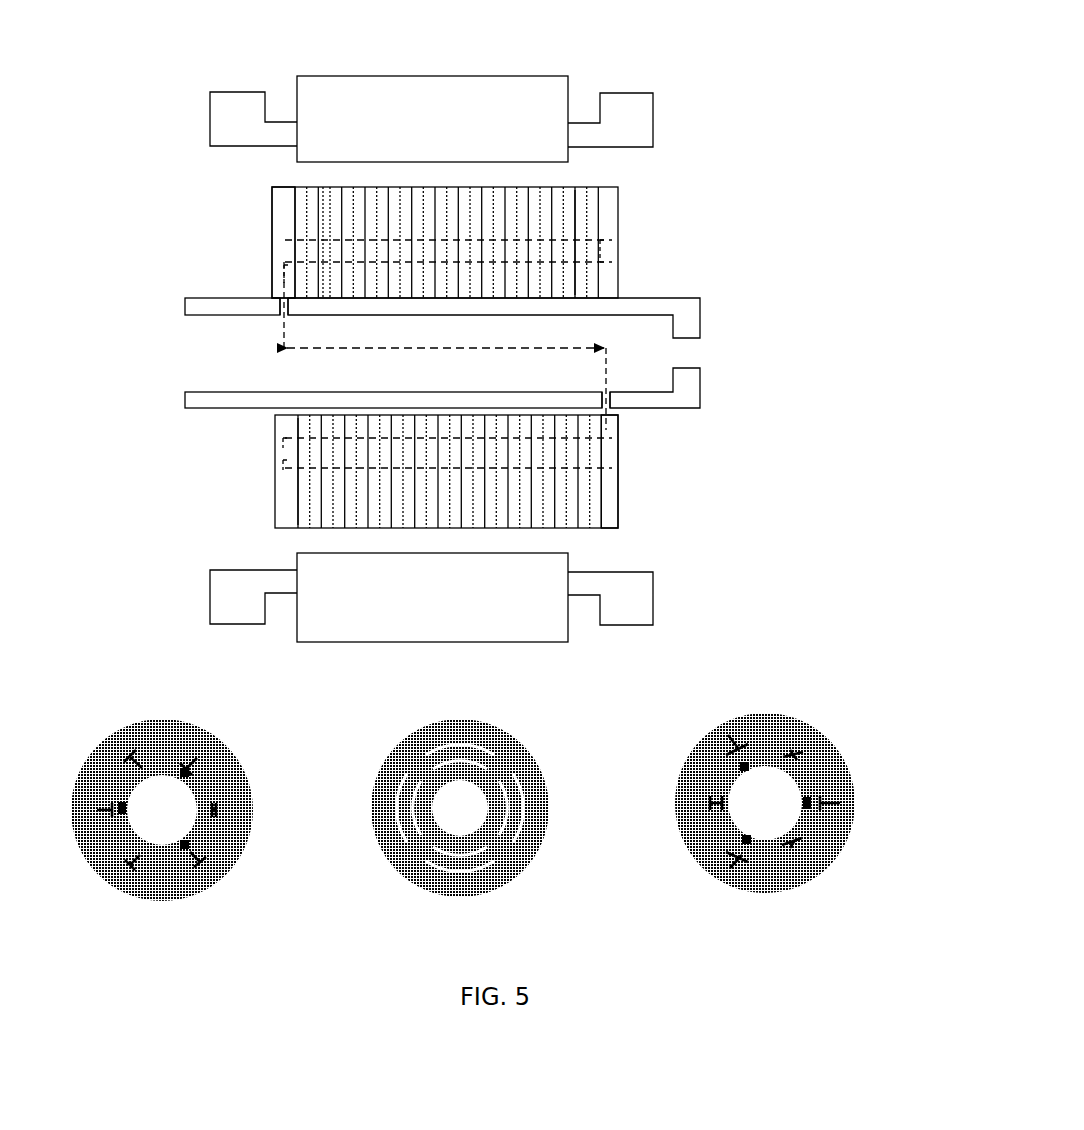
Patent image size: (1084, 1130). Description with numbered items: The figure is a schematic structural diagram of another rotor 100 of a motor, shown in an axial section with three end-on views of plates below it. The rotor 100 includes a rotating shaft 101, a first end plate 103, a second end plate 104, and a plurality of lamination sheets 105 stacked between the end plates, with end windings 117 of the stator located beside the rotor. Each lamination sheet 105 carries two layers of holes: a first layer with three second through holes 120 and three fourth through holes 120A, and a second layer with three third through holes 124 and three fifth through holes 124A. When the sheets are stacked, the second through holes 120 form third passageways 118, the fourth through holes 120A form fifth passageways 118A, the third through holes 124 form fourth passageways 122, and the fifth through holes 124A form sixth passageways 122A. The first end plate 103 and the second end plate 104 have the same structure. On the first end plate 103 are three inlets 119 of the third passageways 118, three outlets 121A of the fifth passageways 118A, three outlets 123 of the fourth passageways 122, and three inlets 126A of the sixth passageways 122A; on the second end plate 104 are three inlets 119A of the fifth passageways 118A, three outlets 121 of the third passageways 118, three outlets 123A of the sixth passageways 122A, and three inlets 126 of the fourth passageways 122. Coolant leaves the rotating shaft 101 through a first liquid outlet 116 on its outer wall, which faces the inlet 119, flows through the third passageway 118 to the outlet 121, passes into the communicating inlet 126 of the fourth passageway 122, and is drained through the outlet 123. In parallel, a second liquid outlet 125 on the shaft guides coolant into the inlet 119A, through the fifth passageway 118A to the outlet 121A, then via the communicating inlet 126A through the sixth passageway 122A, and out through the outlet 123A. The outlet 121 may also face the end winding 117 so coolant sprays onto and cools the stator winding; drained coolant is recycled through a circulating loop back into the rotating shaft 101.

The rotor 100 is at (243, 75).
The rotating shaft 101 is at (690, 298).
The first end plate 103 is at (280, 196).
The second end plate 104 is at (600, 258).
The lamination sheets 105 is at (580, 186).
The first liquid outlet 116 is at (272, 298).
The end winding 117 is at (636, 93).
The third passageway 118 is at (588, 266).
The fifth passageway 118A is at (507, 440).
The inlet of third passageway 119 is at (284, 282).
The inlet of fifth passageway 119A is at (600, 439).
The second through hole 120 is at (541, 262).
The fourth through hole 120A is at (308, 478).
The outlet of third passageway 121 is at (602, 258).
The outlet of fifth passageway 121A is at (283, 440).
The fourth passageway 122 is at (512, 240).
The sixth passageway 122A is at (515, 470).
The outlet of fourth passageway 123 is at (272, 231).
The outlet of sixth passageway 123A is at (605, 493).
The third through hole 124 is at (324, 241).
The fifth through hole 124A is at (308, 460).
The second liquid outlet 125 is at (612, 378).
The inlet of fourth passageway 126 is at (600, 262).
The inlet of sixth passageway 126A is at (283, 462).